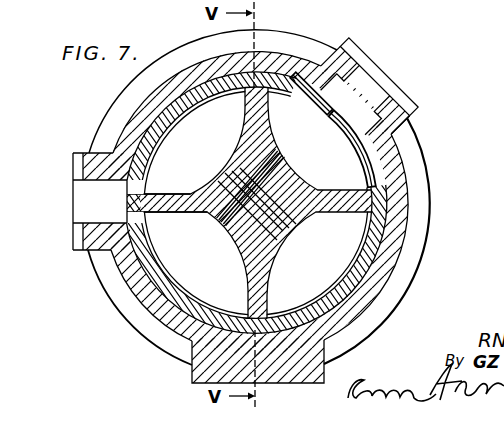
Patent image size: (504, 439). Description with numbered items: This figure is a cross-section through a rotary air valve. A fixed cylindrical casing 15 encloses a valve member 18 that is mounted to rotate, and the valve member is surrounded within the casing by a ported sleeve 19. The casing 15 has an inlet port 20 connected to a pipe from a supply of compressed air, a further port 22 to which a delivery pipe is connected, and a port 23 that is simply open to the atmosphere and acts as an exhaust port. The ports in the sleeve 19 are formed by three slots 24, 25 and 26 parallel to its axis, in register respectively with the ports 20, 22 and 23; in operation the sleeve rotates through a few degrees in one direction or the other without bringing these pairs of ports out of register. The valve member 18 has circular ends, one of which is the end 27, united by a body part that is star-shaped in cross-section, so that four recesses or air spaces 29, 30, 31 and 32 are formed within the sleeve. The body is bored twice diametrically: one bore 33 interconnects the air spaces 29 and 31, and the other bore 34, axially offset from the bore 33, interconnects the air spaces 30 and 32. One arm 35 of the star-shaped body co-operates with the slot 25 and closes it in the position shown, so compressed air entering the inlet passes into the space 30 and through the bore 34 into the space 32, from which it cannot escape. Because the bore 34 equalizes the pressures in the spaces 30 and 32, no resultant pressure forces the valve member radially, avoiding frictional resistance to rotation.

The cylindrical casing 15 is at (222, 62).
The valve member 18 is at (352, 186).
The ported sleeve 19 is at (292, 80).
The inlet port 20 is at (368, 125).
The port 22 is at (88, 249).
The exhaust port 23 is at (349, 317).
The slot 24 is at (340, 115).
The slot 25 is at (135, 208).
The slot 26 is at (342, 286).
The circular end 27 is at (122, 110).
The air space 29 is at (194, 141).
The air space 30 is at (319, 139).
The air space 31 is at (319, 265).
The air space 32 is at (196, 265).
The bore 33 is at (293, 234).
The bore 34 is at (277, 163).
The arm 35 is at (167, 217).